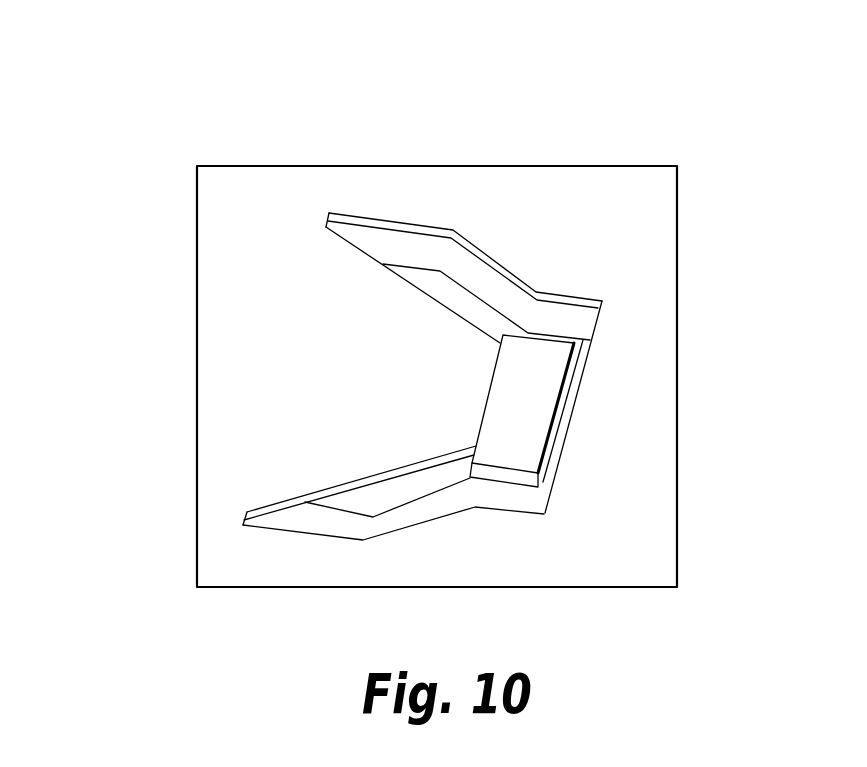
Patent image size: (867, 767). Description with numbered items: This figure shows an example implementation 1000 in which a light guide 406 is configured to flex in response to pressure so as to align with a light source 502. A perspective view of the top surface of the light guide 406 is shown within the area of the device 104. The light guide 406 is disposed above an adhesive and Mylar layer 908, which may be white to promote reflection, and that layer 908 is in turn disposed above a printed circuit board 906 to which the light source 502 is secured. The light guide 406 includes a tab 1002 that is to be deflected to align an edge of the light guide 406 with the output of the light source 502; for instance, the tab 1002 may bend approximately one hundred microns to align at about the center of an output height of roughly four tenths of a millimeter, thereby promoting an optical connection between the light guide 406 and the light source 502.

The example implementation 1000 is at (155, 82).
The housing 104 is at (675, 98).
The light guide 406 is at (610, 573).
The tab 1002 is at (357, 384).
The light source 502 is at (542, 411).
The printed circuit board 906 is at (382, 498).
The adhesive and Mylar layer 908 is at (437, 510).